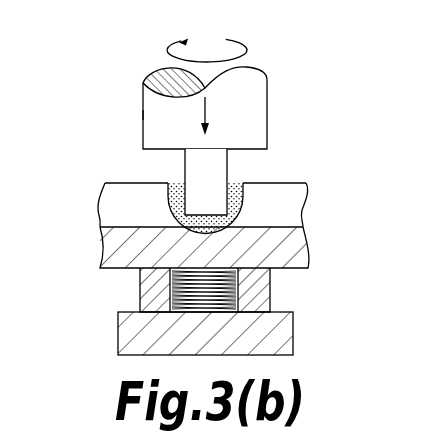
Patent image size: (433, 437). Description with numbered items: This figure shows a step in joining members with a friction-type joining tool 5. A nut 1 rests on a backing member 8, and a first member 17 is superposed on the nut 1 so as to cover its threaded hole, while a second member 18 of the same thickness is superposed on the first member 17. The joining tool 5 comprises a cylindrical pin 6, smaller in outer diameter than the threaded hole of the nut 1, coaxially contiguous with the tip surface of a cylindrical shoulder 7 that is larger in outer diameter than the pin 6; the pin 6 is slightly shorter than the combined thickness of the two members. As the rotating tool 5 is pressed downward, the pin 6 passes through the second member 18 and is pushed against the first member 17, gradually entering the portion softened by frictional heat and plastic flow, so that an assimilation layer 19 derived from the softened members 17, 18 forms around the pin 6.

The nut 1 is at (272, 285).
The joining tool 5 is at (142, 112).
The pin 6 is at (220, 172).
The shoulder 7 is at (260, 107).
The backing member 8 is at (118, 334).
The first member 17 is at (101, 247).
The second member 18 is at (303, 208).
The assimilation layer 19 is at (170, 189).